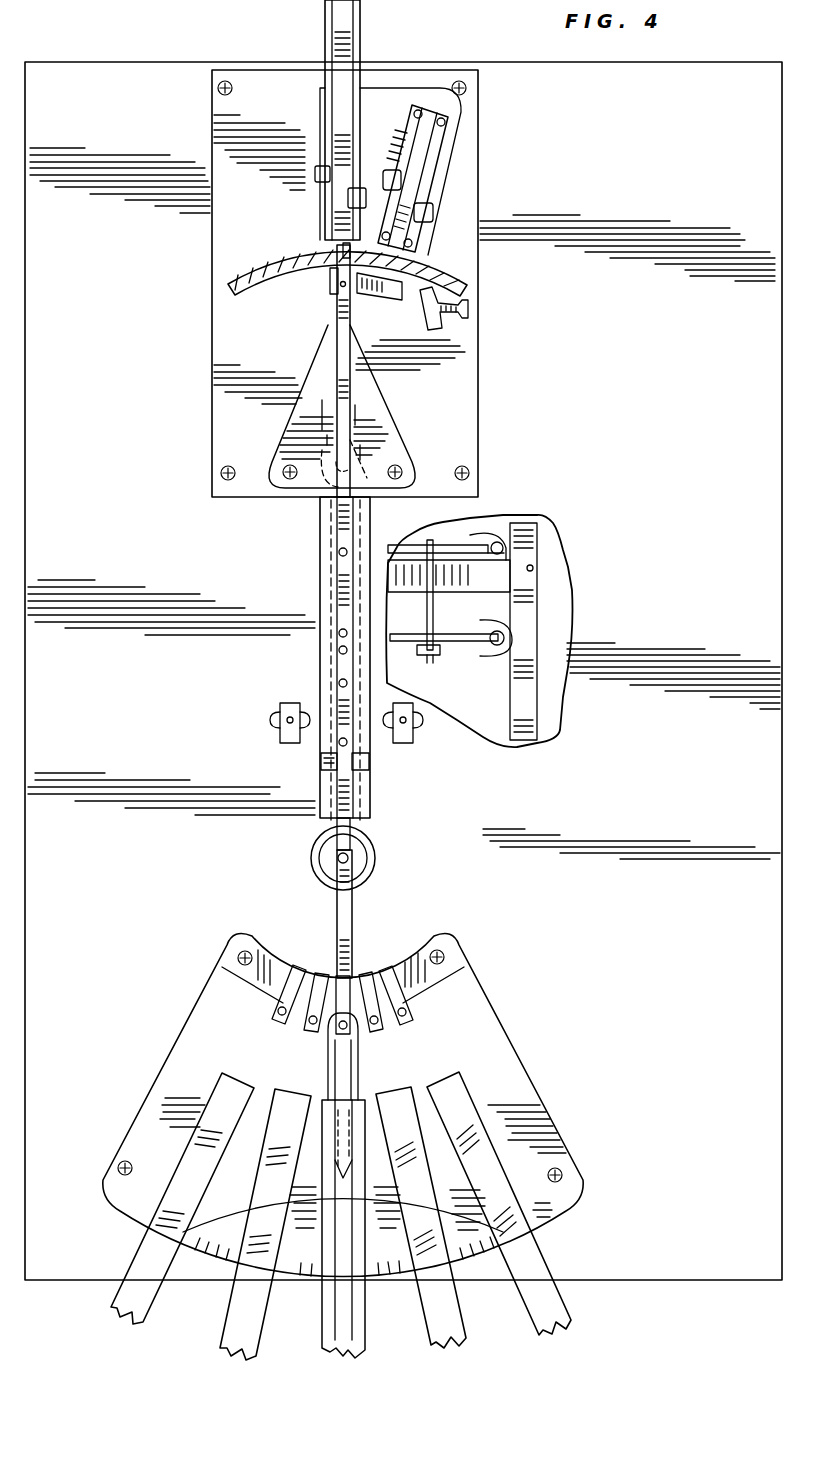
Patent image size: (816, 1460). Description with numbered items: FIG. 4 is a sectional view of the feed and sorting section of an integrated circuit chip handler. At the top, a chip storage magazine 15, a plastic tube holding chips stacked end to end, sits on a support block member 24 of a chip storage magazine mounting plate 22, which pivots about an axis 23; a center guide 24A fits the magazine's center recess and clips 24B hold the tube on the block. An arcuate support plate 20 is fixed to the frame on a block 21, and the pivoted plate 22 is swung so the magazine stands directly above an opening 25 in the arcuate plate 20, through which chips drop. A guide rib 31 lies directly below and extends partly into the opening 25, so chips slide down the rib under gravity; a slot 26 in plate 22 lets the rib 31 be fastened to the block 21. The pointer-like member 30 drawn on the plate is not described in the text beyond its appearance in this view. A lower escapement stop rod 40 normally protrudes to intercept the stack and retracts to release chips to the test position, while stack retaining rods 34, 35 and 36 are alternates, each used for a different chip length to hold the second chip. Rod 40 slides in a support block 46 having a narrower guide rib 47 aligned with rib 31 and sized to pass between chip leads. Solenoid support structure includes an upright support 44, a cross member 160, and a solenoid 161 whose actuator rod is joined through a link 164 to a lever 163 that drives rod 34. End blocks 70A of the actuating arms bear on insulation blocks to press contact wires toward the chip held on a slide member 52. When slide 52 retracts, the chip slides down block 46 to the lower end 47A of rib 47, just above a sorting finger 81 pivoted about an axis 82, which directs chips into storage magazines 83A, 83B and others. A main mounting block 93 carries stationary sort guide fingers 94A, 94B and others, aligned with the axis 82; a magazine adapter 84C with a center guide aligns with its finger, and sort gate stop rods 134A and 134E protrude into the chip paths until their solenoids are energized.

The chip storage magazine 15 is at (330, 25).
The arcuate support plate 20 is at (448, 278).
The block 21 is at (215, 248).
The chip storage magazine mounting plate 22 is at (382, 103).
The pivot axis 23 is at (345, 465).
The support block member 24 is at (435, 170).
The center guide 24A is at (425, 150).
The clips 24B is at (433, 212).
The opening 25 is at (328, 250).
The slot 26 is at (378, 302).
The pointer 30 is at (258, 424).
The guide rib 31 is at (343, 320).
The stack retaining rod 34 is at (340, 550).
The stack retaining rod 35 is at (340, 630).
The stack retaining rod 36 is at (340, 652).
The lower escapement stop rod 40 is at (347, 685).
The support 44 is at (535, 605).
The support block 46 is at (337, 645).
The guide rib 47 is at (345, 565).
The lower end of rib 47A is at (352, 828).
The slide member 52 is at (369, 762).
The end blocks 70A is at (278, 715).
The sorting finger 81 is at (348, 905).
The pivot axis 82 is at (330, 860).
The storage magazine 83A is at (182, 1162).
The storage magazine 83B is at (255, 1212).
The magazine adapter 84C is at (358, 1060).
The main mounting block 93 is at (445, 958).
The sort guide finger 94A is at (280, 1012).
The sort guide finger 94B is at (313, 1028).
The sort gate stop rod 134A is at (283, 1000).
The sort gate stop rod 134E is at (406, 1012).
The cross member 160 is at (451, 656).
The solenoid 161 is at (500, 532).
The lever 163 is at (490, 540).
The link 164 is at (461, 601).